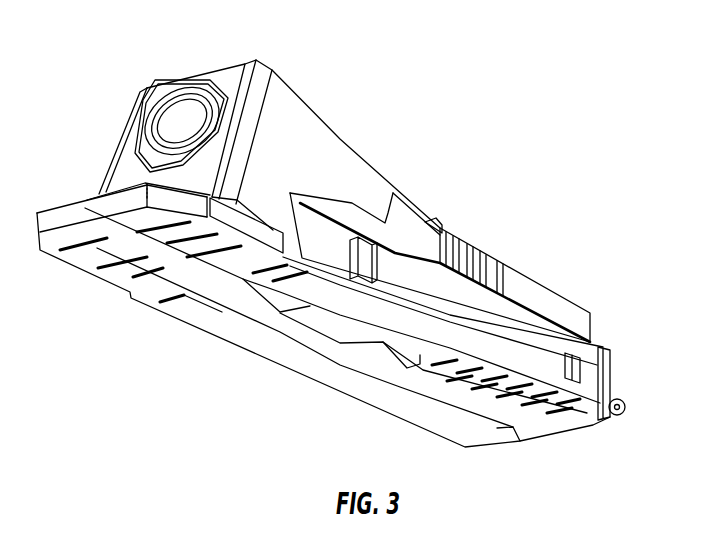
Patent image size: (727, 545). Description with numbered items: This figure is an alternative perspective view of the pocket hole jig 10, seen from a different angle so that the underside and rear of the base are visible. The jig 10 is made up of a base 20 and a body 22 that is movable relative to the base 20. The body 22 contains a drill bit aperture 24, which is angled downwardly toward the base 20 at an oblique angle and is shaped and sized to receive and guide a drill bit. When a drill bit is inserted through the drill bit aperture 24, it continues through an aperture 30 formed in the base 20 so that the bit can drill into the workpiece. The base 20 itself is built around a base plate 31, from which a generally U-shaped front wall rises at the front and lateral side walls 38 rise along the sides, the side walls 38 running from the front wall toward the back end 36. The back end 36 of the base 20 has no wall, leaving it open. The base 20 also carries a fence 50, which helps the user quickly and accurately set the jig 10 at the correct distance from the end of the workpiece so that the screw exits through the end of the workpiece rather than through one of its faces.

The jig 10 is at (458, 135).
The base 20 is at (63, 205).
The body 22 is at (227, 77).
The drill bit aperture 24 is at (182, 110).
The aperture 30 is at (338, 342).
The base plate 31 is at (230, 327).
The back end 36 is at (95, 207).
The lateral side walls 38 is at (438, 300).
The fence 50 is at (613, 363).